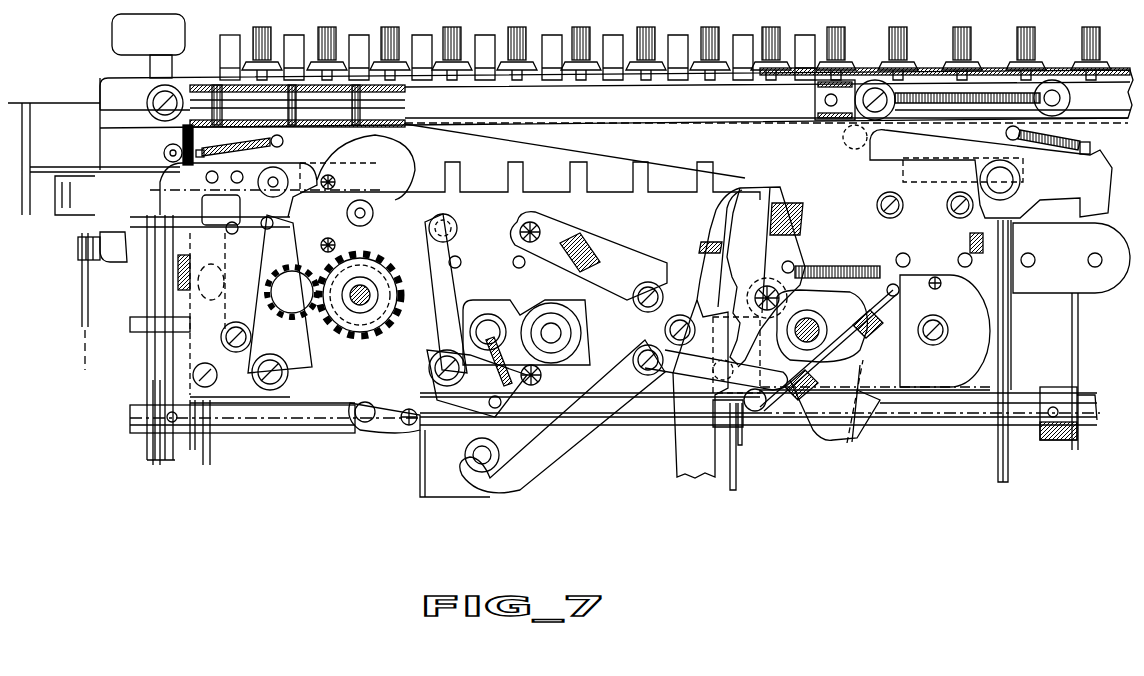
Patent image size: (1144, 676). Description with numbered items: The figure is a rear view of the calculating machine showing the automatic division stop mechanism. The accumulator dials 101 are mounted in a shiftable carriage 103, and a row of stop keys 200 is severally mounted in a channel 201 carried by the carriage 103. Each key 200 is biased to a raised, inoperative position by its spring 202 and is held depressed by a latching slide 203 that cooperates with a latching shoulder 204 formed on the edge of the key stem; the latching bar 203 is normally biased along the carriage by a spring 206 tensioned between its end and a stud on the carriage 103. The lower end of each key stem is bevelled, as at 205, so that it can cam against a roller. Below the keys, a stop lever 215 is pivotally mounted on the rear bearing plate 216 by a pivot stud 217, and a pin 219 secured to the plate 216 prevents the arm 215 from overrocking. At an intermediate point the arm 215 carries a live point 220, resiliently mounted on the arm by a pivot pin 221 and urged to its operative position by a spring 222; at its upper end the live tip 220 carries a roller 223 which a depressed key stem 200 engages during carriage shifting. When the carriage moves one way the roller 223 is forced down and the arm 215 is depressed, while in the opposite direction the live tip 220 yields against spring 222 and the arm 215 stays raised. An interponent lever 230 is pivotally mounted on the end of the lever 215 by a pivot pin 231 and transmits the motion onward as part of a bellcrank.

The accumulator dials 101 is at (853, 66).
The shiftable carriage 103 is at (75, 90).
The stop key 200 is at (231, 36).
The channel 201 is at (556, 108).
The spring 202 is at (405, 92).
The latching slide 203 is at (405, 121).
The latching shoulder 204 is at (214, 88).
The bevelled lower end 205 is at (220, 130).
The spring 206 is at (815, 97).
The stop lever 215 is at (110, 263).
The rear bearing plate 216 is at (498, 258).
The pivot stud 217 is at (453, 223).
The pin 219 is at (228, 232).
The live point 220 is at (185, 138).
The pivot pin 221 is at (175, 181).
The spring 222 is at (273, 250).
The roller 223 is at (163, 154).
The interponent lever 230 is at (80, 292).
The pivot pin 231 is at (78, 248).